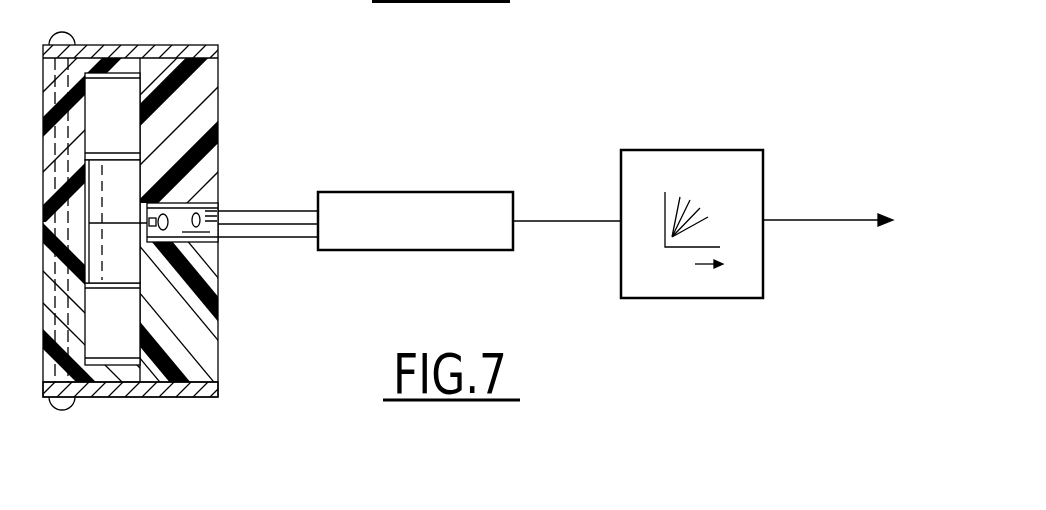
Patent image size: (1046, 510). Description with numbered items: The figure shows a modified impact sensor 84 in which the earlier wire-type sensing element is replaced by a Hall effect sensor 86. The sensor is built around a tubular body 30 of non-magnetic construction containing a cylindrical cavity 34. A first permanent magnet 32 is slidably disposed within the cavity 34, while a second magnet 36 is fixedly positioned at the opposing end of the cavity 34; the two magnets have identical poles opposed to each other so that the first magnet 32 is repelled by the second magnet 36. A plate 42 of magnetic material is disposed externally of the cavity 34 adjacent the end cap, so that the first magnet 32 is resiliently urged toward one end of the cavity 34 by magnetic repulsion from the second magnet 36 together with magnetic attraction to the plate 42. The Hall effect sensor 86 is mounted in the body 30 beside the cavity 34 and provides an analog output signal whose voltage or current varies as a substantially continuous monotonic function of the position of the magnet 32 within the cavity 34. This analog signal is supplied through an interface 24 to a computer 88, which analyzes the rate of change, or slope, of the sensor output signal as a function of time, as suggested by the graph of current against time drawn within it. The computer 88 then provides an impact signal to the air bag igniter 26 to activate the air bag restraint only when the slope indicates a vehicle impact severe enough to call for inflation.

The interface 24 is at (484, 192).
The air bag igniter 26 is at (828, 210).
The tubular body 30 is at (217, 93).
The first permanent magnet 32 is at (130, 370).
The cylindrical cavity 34 is at (130, 267).
The second magnet 36 is at (130, 80).
The plate 42 is at (193, 398).
The modified impact sensor 84 is at (424, 101).
The Hall effect sensor 86 is at (252, 196).
The computer 88 is at (710, 150).